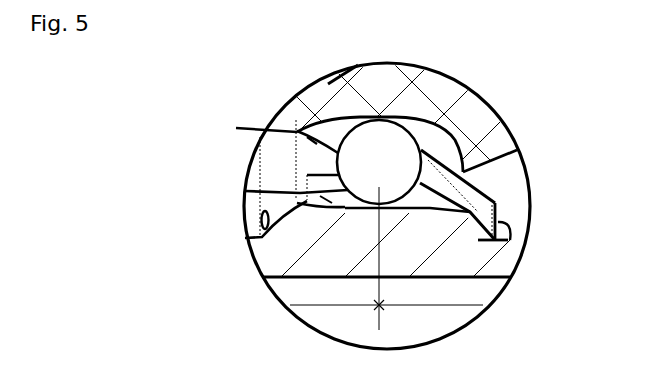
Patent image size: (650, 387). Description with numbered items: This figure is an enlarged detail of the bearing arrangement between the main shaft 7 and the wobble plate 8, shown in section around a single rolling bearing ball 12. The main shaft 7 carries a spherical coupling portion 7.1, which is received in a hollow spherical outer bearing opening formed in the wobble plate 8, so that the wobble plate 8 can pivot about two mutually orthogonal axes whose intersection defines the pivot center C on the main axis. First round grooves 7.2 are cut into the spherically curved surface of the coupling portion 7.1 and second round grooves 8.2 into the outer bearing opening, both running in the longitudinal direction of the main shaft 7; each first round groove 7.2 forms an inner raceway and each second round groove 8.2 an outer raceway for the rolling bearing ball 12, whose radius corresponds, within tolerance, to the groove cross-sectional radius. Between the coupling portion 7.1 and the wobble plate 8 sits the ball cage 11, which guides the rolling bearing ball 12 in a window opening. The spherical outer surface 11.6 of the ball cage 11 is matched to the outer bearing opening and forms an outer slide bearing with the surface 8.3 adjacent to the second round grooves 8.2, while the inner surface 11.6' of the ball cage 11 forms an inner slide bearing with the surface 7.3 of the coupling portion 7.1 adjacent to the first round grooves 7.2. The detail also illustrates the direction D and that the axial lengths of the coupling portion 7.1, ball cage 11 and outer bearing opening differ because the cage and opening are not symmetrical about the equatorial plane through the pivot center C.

The main shaft 7 is at (264, 273).
The spherical coupling portion 7.1 is at (262, 220).
The first round grooves 7.2 is at (262, 190).
The surface of the spherical coupling portion 7.3 is at (508, 240).
The wobble plate 8 is at (480, 112).
The second round grooves 8.2 is at (260, 133).
The surface of the hollow spherical bearing opening 8.3 is at (468, 163).
The ball cage 11 is at (503, 205).
The spherical outer surface of the ball cage 11.6 is at (518, 176).
The inner surface of the ball cage 11.6' is at (509, 246).
The rolling bearing ball 12 is at (392, 167).
The direction D is at (286, 106).
The pivot center C is at (381, 306).